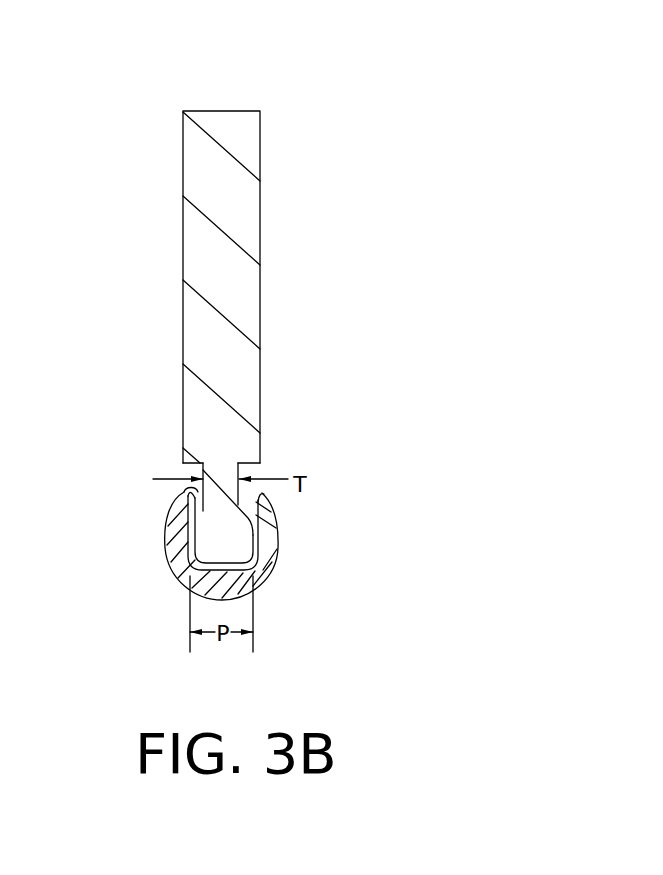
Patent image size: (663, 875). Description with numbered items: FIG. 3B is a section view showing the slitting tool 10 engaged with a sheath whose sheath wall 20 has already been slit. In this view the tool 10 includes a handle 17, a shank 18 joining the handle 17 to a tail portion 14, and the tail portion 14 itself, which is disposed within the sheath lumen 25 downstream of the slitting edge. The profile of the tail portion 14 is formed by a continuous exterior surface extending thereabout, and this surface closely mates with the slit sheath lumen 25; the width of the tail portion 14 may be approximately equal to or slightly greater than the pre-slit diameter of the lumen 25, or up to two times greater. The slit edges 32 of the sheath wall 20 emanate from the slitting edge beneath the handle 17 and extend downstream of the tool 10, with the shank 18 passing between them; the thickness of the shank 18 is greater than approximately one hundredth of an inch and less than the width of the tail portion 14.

The slitting tool 10 is at (305, 120).
The tool handle 17 is at (245, 265).
The shank 18 is at (190, 475).
The sheath wall 20 is at (268, 541).
The tail portion 14 is at (203, 533).
The slit edges 32 is at (187, 487).
The sheath lumen 25 is at (190, 576).